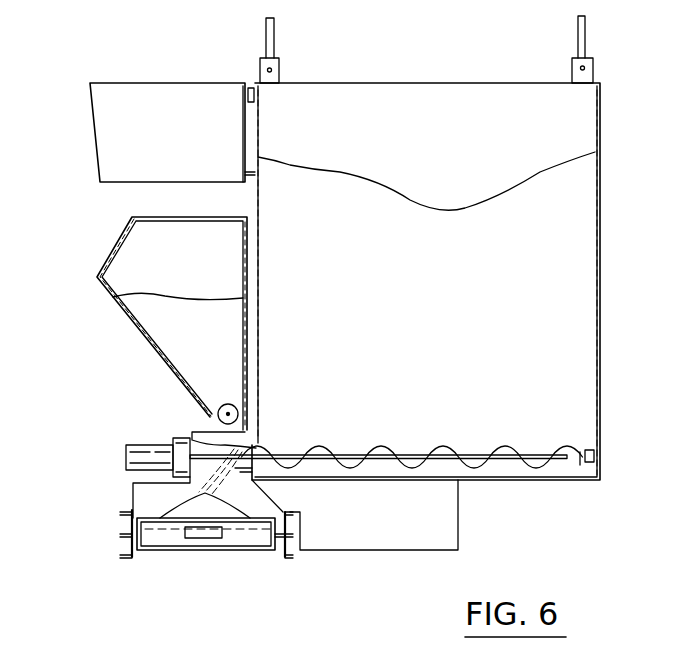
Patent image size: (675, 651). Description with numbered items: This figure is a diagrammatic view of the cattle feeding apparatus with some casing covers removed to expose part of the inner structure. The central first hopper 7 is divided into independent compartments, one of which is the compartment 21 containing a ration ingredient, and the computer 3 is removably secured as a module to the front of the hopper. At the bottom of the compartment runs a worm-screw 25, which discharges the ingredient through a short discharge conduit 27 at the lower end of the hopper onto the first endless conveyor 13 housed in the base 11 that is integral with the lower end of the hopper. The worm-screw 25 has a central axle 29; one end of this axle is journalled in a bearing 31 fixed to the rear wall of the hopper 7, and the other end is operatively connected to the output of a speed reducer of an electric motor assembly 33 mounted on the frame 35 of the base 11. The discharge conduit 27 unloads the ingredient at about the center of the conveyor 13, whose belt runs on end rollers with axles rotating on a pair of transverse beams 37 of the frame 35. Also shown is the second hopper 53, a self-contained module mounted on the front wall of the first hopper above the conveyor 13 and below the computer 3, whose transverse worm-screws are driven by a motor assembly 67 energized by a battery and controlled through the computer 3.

The computer 3 is at (91, 123).
The first hopper 7 is at (600, 297).
The base 11 is at (458, 531).
The first endless conveyor 13 is at (172, 554).
The compartment 21 is at (575, 249).
The worm-screw 25 is at (568, 445).
The discharge conduit 27 is at (207, 430).
The central axle 29 is at (540, 452).
The bearing 31 is at (598, 452).
The electric motor assembly 33 is at (123, 459).
The frame 35 is at (122, 556).
The transverse beams 37 is at (128, 523).
The second hopper 53 is at (128, 316).
The motor assembly 67 is at (208, 396).